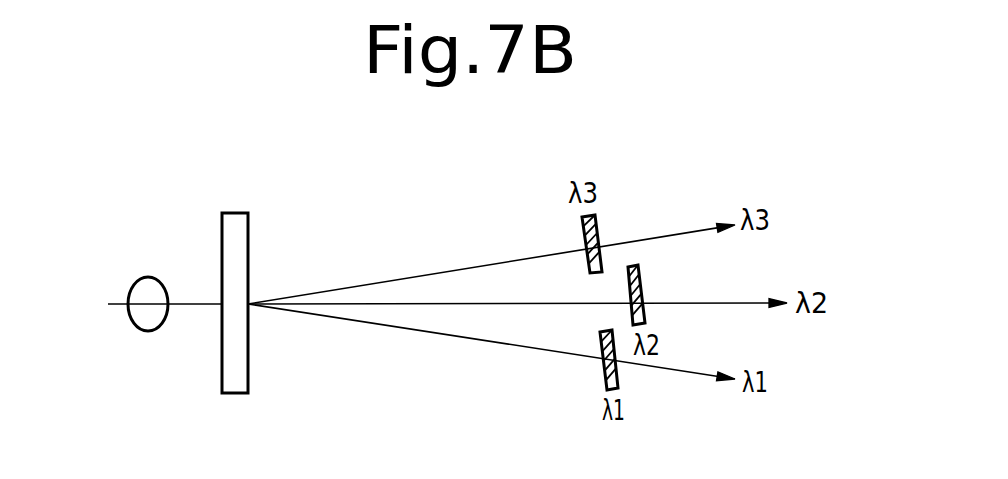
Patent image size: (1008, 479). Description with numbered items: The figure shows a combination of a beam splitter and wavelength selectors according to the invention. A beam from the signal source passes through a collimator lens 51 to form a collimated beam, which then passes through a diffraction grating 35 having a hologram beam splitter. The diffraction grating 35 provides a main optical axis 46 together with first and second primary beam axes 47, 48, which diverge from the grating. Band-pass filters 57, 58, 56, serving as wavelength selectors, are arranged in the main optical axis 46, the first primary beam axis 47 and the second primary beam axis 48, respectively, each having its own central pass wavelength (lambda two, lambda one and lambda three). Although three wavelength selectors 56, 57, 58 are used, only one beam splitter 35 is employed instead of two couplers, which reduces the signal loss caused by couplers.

The diffraction grating 35 is at (237, 213).
The collimator lens 51 is at (148, 278).
The main optical axis 46 is at (505, 302).
The first primary beam axis 47 is at (440, 333).
The second primary beam axis 48 is at (452, 268).
The band-pass filter 56 is at (597, 232).
The band-pass filter 57 is at (641, 285).
The band-pass filter 58 is at (617, 376).